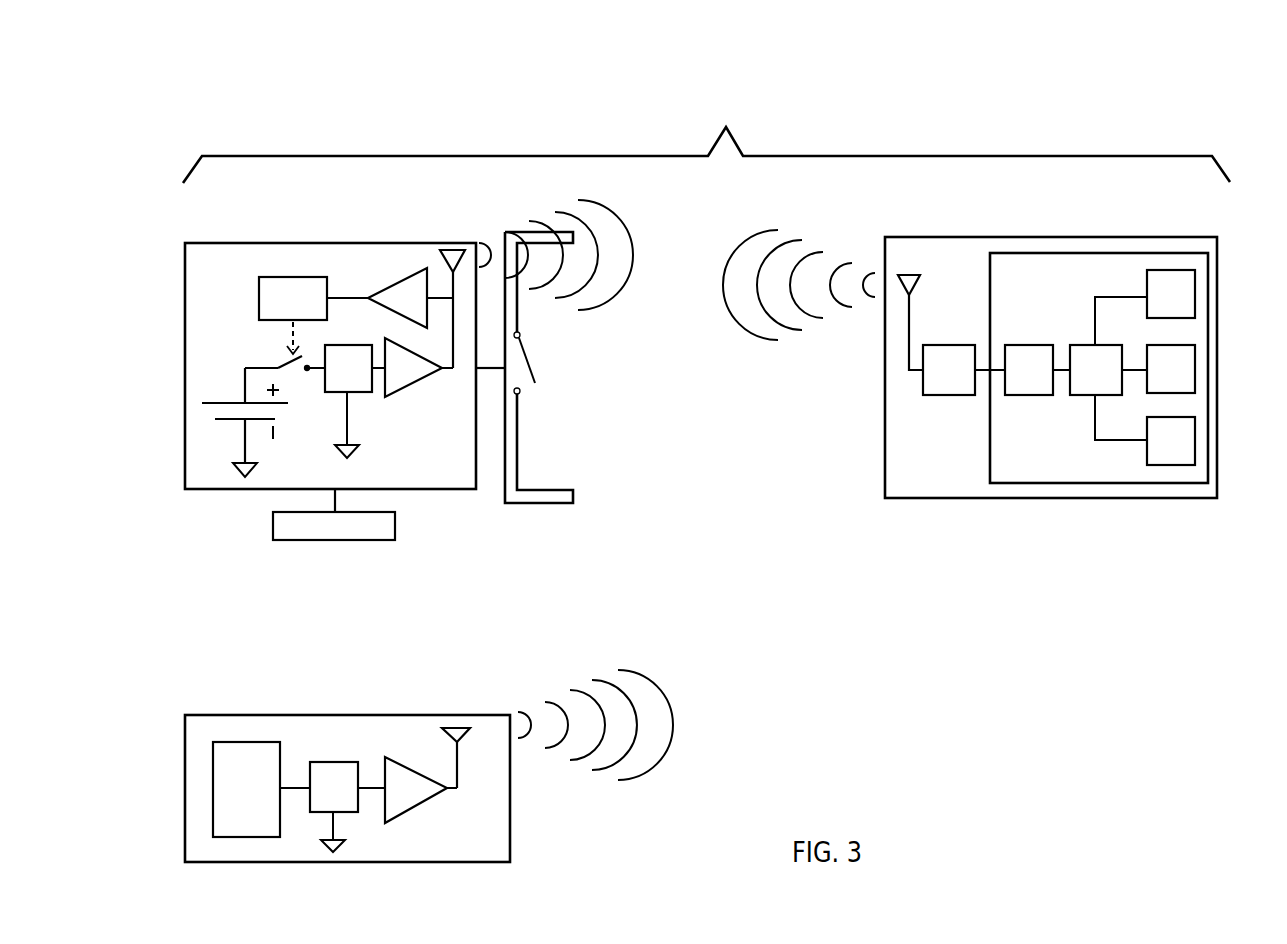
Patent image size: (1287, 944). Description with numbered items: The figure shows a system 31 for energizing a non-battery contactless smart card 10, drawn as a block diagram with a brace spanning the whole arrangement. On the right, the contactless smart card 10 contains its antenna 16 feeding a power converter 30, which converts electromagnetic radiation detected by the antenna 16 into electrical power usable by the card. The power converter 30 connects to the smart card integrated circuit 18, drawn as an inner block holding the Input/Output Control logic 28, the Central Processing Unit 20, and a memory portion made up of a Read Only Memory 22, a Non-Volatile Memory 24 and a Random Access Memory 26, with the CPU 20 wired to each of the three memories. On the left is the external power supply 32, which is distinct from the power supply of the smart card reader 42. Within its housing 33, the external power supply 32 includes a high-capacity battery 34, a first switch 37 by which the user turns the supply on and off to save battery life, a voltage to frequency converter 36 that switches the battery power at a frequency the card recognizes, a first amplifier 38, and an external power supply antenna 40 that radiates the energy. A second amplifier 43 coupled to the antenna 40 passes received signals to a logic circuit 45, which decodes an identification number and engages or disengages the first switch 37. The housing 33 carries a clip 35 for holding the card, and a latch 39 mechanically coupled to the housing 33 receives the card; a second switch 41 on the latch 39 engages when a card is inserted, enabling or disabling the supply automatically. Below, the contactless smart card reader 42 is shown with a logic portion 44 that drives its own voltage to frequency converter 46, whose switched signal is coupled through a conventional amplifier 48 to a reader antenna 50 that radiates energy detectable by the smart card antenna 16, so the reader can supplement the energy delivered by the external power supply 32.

The contactless smart card 10 is at (926, 210).
The antenna 16 is at (909, 333).
The smart card integrated circuit 18 is at (1150, 253).
The Central Processing Unit 20 is at (1077, 345).
The Read Only Memory 22 is at (1195, 290).
The Non-Volatile Memory 24 is at (1195, 367).
The Random Access Memory 26 is at (1195, 440).
The Input/Output Control logic 28 is at (1022, 345).
The power converter 30 is at (947, 345).
The system for energizing the contactless smart card 31 is at (802, 78).
The external power supply 32 is at (278, 214).
The housing 33 is at (185, 458).
The battery 34 is at (222, 403).
The clip 35 is at (290, 541).
The voltage to frequency converter 36 is at (375, 395).
The first switch 37 is at (283, 365).
The first amplifier 38 is at (420, 380).
The latch 39 is at (550, 490).
The external power supply antenna 40 is at (450, 289).
The second switch 41 is at (527, 358).
The contactless smart card reader 42 is at (494, 672).
The second amplifier 43 is at (401, 281).
The logic portion 44 is at (253, 742).
The logic circuit 45 is at (270, 277).
The voltage to frequency converter 46 is at (342, 762).
The amplifier 48 is at (425, 777).
The contactless smart card reader antenna 50 is at (457, 762).